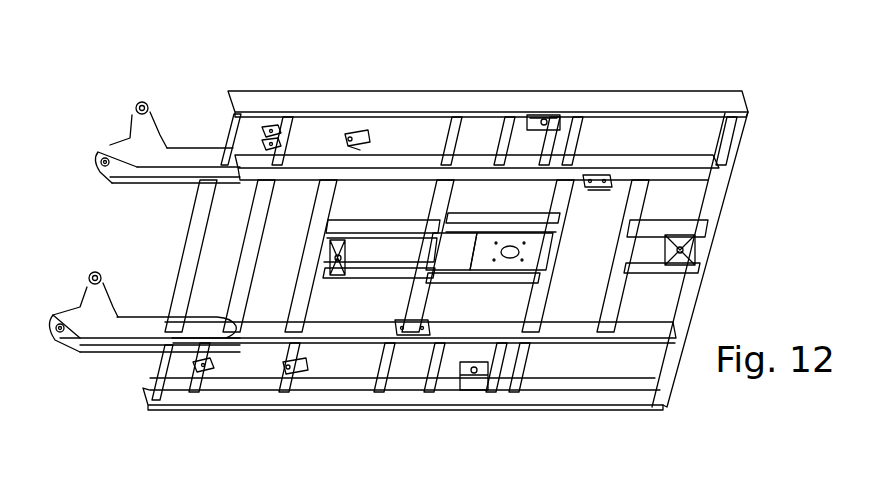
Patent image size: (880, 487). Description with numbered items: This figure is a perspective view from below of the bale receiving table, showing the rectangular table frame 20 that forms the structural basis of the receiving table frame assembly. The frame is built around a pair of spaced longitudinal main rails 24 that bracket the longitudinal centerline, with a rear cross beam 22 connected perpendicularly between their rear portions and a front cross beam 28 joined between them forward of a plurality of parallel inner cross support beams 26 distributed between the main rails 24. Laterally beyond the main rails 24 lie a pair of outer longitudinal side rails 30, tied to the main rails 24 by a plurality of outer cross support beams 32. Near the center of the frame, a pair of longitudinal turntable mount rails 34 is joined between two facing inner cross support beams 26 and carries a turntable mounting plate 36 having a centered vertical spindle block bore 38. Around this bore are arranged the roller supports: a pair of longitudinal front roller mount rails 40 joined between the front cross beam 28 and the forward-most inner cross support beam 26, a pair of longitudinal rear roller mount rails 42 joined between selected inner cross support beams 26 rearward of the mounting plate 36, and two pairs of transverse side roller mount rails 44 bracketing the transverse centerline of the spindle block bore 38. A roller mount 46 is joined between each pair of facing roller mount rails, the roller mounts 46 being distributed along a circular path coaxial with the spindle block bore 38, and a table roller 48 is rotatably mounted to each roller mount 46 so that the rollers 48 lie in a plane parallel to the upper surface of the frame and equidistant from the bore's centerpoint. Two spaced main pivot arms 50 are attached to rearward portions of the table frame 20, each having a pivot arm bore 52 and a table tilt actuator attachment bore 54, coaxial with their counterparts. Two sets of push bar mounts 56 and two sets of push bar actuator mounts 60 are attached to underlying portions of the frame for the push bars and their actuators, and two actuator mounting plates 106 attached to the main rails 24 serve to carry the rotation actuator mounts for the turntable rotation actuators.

The rectangular table frame 20 is at (483, 53).
The rear cross beam 22 is at (186, 262).
The longitudinal main rails 24 is at (673, 158).
The inner cross support beams 26 is at (244, 272).
The front cross beam 28 is at (668, 375).
The outer longitudinal side rails 30 is at (296, 97).
The outer cross support beams 32 is at (233, 125).
The longitudinal turntable mount rails 34 is at (466, 213).
The turntable mounting plate 36 is at (508, 272).
The spindle block bore 38 is at (510, 246).
The longitudinal front roller mount rails 40 is at (657, 225).
The longitudinal rear roller mount rails 42 is at (389, 230).
The transverse side roller mount rails 44 is at (507, 146).
The roller mounts 46 is at (545, 118).
The table rollers 48 is at (538, 116).
The main pivot arms 50 is at (172, 148).
The pivot arm bore 52 is at (146, 102).
The table tilt actuator attachment bore 54 is at (104, 157).
The push bar mounts 56 is at (267, 125).
The push bar actuator mounts 60 is at (348, 135).
The actuator mounting plates 106 is at (608, 192).